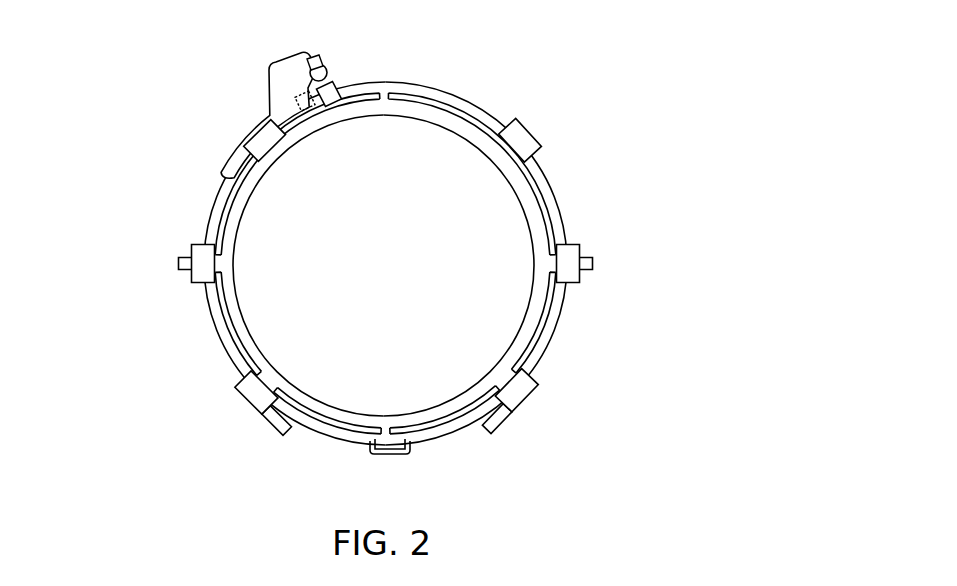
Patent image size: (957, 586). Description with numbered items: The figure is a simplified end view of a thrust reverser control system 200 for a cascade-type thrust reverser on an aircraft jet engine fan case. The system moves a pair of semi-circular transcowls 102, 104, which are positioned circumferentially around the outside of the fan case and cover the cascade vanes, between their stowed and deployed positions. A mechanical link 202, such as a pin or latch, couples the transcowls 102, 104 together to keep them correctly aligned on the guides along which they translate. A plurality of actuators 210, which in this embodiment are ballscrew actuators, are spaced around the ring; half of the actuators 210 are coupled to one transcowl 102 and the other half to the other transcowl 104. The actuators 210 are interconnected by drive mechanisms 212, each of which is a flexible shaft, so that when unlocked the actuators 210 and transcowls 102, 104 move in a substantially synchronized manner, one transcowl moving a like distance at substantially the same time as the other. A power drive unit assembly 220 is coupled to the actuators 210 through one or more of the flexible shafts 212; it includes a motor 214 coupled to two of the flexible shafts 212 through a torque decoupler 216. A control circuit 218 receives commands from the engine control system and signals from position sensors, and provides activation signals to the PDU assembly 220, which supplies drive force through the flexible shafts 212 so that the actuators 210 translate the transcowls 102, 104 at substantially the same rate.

The thrust reverser control system 200 is at (128, 136).
The transcowl 102 is at (537, 308).
The transcowl 104 is at (224, 308).
The mechanical link 202 is at (387, 446).
The actuators 210 is at (247, 124).
The drive mechanisms 212 is at (424, 82).
The motor 214 is at (320, 64).
The torque decoupler 216 is at (314, 100).
The control circuit 218 is at (213, 166).
The power drive unit (PDU) assembly 220 is at (276, 54).